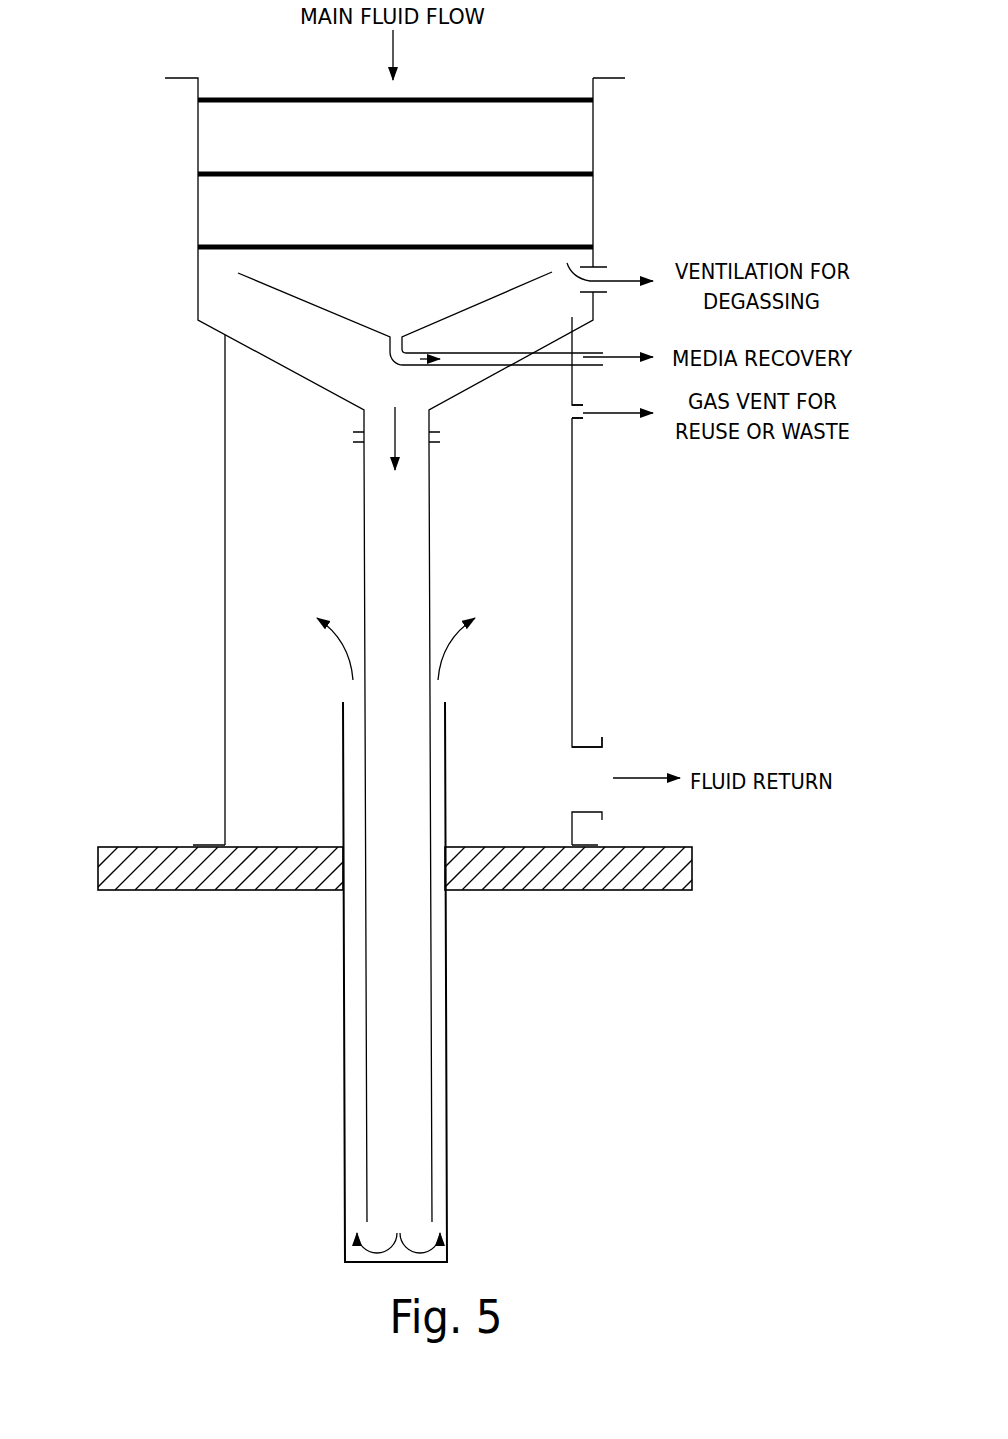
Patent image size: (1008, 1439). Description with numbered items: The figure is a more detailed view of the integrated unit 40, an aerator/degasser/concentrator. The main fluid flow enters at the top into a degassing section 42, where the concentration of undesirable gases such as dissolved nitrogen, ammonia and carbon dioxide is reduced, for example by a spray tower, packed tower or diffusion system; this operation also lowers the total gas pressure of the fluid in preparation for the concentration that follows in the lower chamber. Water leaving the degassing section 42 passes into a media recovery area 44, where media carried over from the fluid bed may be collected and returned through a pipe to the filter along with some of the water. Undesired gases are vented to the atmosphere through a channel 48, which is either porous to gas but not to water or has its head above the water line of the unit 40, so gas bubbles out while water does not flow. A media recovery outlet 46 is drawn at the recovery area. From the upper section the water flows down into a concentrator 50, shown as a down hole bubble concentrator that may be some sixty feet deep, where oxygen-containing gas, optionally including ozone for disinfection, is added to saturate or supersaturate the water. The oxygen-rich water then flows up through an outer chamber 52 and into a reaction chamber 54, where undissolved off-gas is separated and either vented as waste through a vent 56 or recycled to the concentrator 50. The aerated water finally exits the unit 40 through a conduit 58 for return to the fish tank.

The integrated unit 40 is at (757, 130).
The degassing section 42 is at (582, 158).
The media recovery area 44 is at (343, 313).
The media recovery outlet 46 is at (583, 352).
The channel 48 is at (588, 258).
The concentrator 50 is at (412, 583).
The outer chamber 52 is at (437, 1043).
The reaction chamber 54 is at (557, 585).
The vent 56 is at (583, 422).
The conduit 58 is at (587, 745).